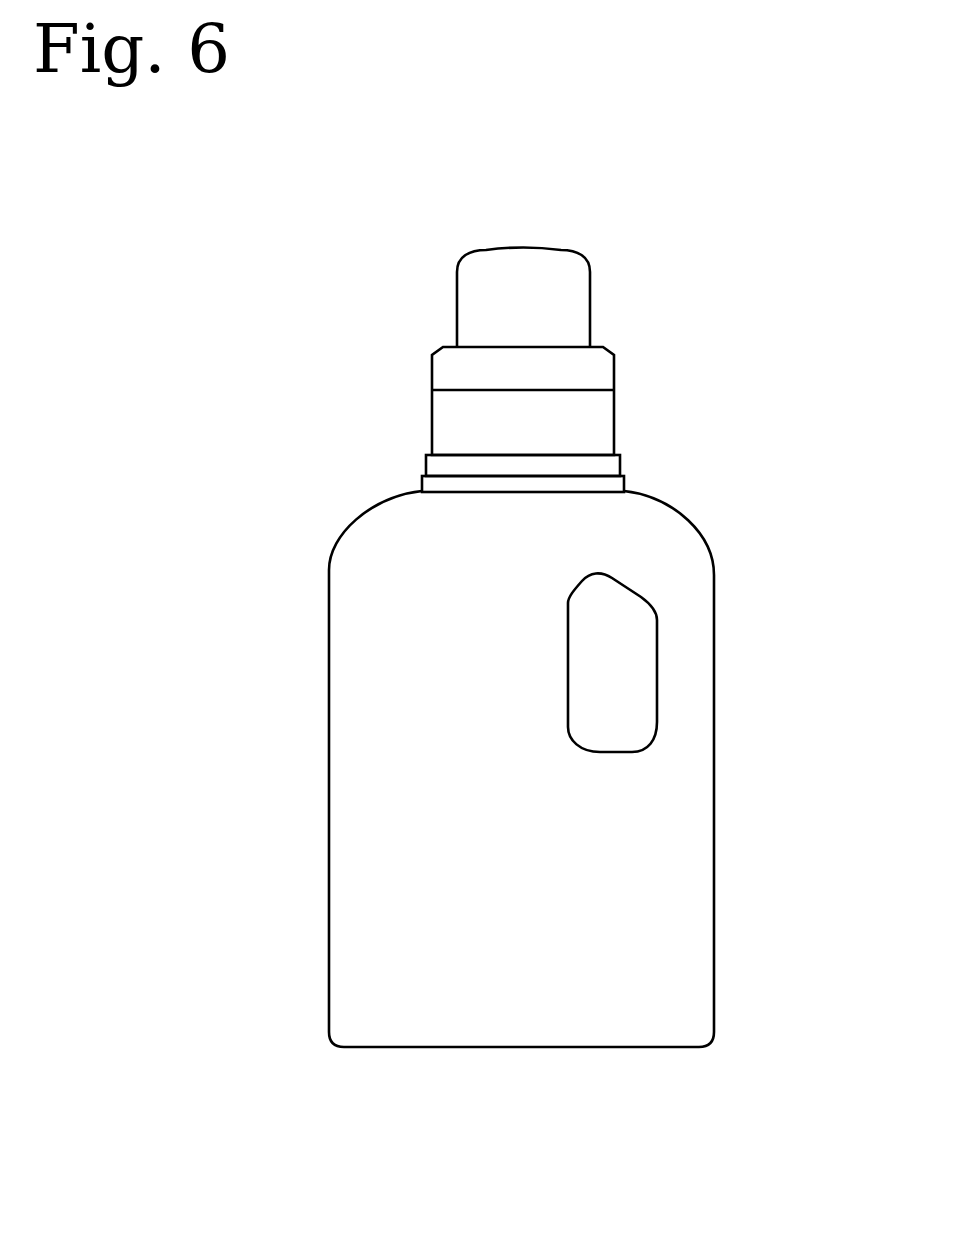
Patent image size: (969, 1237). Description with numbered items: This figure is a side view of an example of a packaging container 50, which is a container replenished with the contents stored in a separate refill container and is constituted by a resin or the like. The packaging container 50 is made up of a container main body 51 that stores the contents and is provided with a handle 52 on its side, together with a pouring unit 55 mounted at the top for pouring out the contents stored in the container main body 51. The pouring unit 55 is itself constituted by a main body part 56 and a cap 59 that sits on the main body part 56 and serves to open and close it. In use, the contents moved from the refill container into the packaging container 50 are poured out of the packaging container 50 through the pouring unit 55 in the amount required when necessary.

The packaging container 50 is at (538, 163).
The container main body 51 is at (683, 835).
The handle 52 is at (698, 653).
The pouring unit 55 is at (430, 327).
The main body part 56 is at (618, 412).
The cap 59 is at (592, 293).